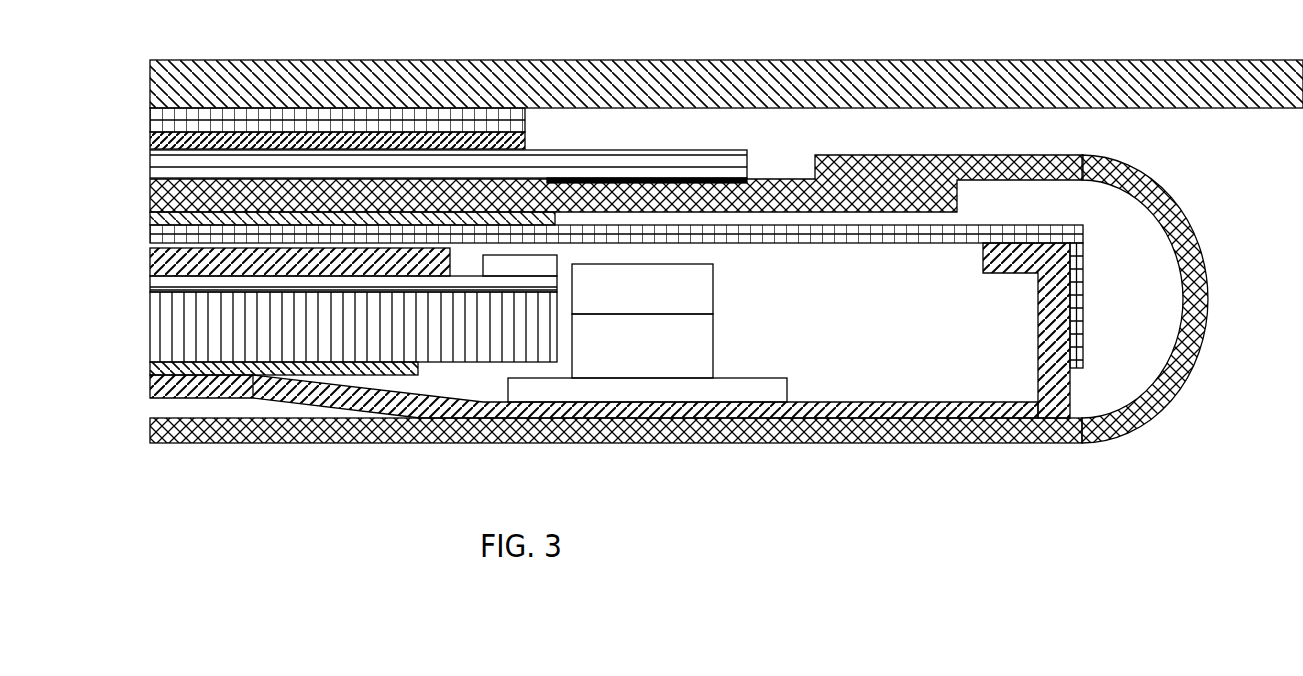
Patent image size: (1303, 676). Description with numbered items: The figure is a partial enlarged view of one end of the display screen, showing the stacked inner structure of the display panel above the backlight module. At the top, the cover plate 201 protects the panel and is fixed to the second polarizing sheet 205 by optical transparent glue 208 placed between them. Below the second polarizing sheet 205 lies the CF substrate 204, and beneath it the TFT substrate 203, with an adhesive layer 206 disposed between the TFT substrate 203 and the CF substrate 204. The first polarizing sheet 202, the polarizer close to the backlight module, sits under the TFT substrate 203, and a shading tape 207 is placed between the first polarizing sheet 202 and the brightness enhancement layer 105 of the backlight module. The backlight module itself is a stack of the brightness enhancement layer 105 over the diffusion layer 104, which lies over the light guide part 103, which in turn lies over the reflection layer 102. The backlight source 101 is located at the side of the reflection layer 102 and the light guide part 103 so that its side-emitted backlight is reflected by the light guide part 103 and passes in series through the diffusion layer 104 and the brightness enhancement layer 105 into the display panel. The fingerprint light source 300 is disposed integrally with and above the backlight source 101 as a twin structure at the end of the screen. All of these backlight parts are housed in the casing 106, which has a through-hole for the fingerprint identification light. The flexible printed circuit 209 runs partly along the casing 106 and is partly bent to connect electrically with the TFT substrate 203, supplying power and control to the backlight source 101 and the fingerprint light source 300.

The cover plate 201 is at (150, 82).
The optical transparent glue 208 is at (150, 118).
The second polarizing sheet 205 is at (150, 140).
The CF substrate 204 is at (150, 165).
The adhesive layer 206 is at (748, 183).
The TFT substrate 203 is at (150, 193).
The first polarizing sheet 202 is at (150, 215).
The shading tape 207 is at (150, 237).
The brightness enhancement layer 105 is at (150, 262).
The diffusion layer 104 is at (150, 282).
The light guide part 103 is at (150, 318).
The reflection layer 102 is at (150, 368).
The casing 106 is at (150, 387).
The flexible printed circuit 209 is at (150, 432).
The fingerprint light source 300 is at (703, 287).
The backlight source 101 is at (695, 350).